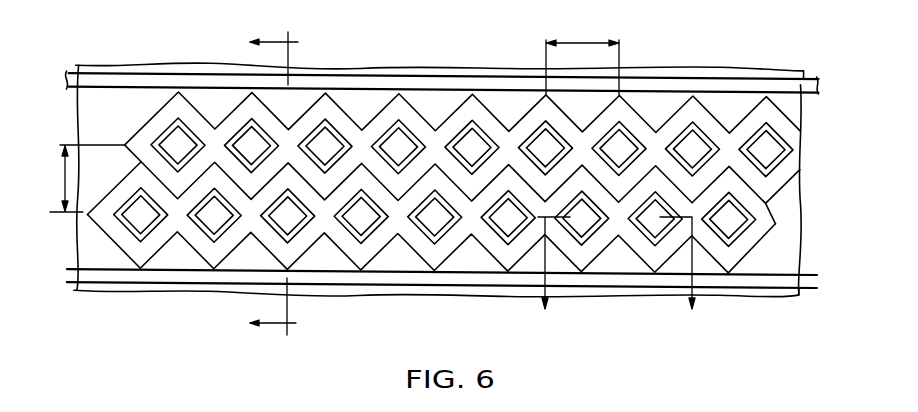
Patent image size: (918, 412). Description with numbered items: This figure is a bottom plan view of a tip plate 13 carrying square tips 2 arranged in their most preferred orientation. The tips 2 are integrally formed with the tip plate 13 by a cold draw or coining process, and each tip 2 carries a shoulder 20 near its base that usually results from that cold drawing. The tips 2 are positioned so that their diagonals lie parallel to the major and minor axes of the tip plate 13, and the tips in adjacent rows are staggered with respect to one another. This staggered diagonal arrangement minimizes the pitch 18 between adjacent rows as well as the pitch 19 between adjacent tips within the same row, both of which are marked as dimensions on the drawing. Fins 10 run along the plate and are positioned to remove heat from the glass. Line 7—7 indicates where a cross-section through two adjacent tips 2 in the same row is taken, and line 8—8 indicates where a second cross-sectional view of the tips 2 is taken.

The fins 10 is at (692, 76).
The tip plate 13 is at (195, 288).
The shoulder 20 is at (398, 103).
The tip 2 is at (275, 236).
The pitch between adjacent rows 18 is at (62, 168).
The pitch between adjacent tips in the same row 19 is at (583, 41).
The section line 8— 8 is at (264, 183).
The section line 7— 7 is at (615, 275).